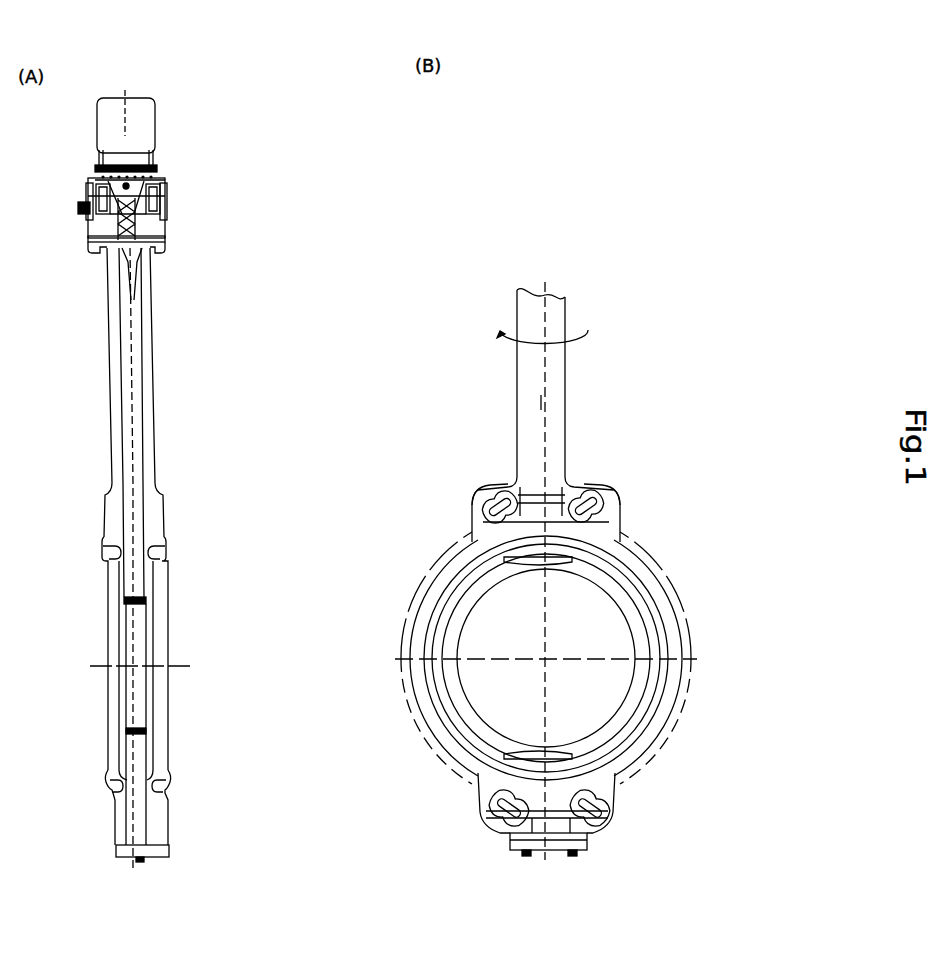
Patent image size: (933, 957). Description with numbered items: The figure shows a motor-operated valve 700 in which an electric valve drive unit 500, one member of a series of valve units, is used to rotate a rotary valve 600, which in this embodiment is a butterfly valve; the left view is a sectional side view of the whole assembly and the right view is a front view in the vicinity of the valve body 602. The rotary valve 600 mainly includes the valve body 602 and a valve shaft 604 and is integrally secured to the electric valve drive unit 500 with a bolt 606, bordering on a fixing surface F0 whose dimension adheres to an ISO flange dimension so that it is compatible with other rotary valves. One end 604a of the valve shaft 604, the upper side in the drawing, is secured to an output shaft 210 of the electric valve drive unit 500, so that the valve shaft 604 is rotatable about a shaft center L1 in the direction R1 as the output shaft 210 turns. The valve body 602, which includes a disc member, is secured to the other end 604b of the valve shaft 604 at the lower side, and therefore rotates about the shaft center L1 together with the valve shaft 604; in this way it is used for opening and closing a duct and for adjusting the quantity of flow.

In FIG. 1A, the electric valve drive unit 500 is at (66, 101).
In FIG. 1A, the motor-operated valve 700 is at (172, 160).
In FIG. 1A, the output shaft 210 is at (133, 222).
In FIG. 1A, the fixing surface F0 is at (150, 229).
In FIG. 1A, the bolt 606 is at (90, 250).
In FIG. 1A, the rotary valve 600 is at (80, 853).
In FIG. 1B, the rotary valve 600 is at (584, 276).
In FIG. 1A, the valve shaft 604 is at (135, 369).
In FIG. 1B, the valve shaft 604 is at (552, 424).
In FIG. 1A, the one end of the valve shaft 604a is at (141, 262).
In FIG. 1B, the other end of the valve shaft 604b is at (528, 561).
In FIG. 1A, the valve body 602 is at (160, 687).
In FIG. 1B, the valve body 602 is at (593, 710).
In FIG. 1B, the shaft center L1 is at (527, 403).
In FIG. 1B, the direction of rotation R1 is at (550, 346).